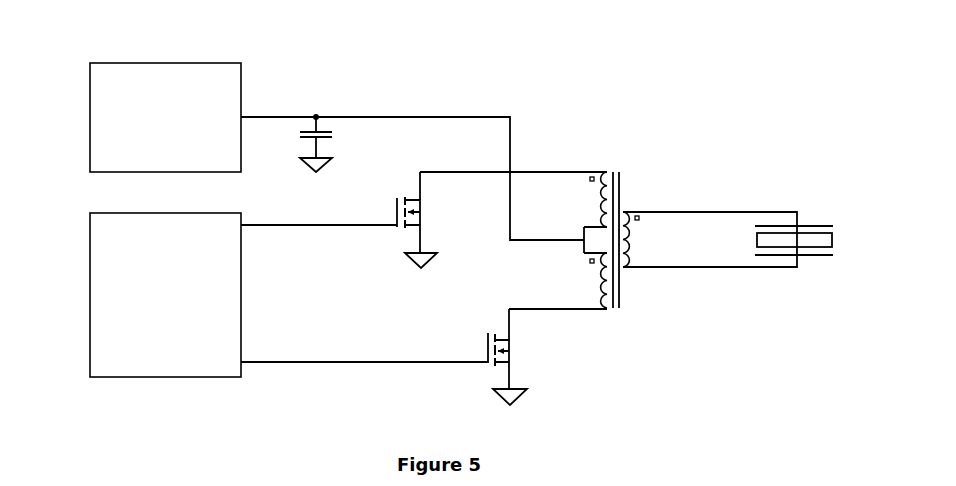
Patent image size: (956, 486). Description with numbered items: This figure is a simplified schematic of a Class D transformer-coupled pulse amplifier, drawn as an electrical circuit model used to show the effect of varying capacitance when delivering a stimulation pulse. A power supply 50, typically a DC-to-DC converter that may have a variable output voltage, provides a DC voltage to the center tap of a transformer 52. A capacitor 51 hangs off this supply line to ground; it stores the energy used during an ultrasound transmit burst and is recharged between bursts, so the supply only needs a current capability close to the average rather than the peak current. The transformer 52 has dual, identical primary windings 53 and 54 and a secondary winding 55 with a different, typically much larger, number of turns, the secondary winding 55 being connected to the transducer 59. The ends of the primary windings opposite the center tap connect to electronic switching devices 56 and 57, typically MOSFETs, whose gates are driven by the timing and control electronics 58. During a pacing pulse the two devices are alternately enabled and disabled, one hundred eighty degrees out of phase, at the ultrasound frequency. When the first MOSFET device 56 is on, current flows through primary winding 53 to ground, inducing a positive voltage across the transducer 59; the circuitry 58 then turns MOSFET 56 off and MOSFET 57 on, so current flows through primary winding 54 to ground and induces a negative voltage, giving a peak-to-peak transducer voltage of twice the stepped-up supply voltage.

The power supply 50 is at (168, 63).
The capacitor 51 is at (298, 138).
The transformer 52 is at (673, 212).
The primary winding 53 is at (596, 200).
The primary winding 54 is at (596, 283).
The secondary winding 55 is at (640, 240).
The electronic switching device 56 is at (428, 212).
The electronic switching device 57 is at (518, 349).
The timing and control electronics 58 is at (144, 212).
The transducer 59 is at (808, 226).